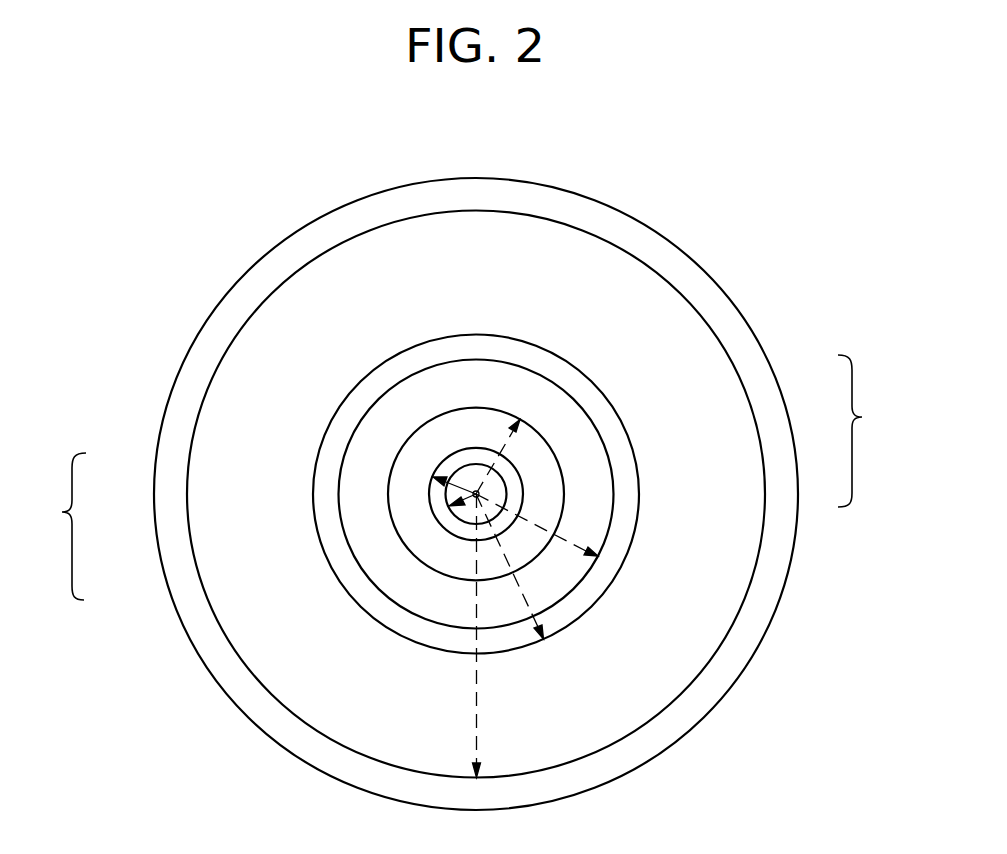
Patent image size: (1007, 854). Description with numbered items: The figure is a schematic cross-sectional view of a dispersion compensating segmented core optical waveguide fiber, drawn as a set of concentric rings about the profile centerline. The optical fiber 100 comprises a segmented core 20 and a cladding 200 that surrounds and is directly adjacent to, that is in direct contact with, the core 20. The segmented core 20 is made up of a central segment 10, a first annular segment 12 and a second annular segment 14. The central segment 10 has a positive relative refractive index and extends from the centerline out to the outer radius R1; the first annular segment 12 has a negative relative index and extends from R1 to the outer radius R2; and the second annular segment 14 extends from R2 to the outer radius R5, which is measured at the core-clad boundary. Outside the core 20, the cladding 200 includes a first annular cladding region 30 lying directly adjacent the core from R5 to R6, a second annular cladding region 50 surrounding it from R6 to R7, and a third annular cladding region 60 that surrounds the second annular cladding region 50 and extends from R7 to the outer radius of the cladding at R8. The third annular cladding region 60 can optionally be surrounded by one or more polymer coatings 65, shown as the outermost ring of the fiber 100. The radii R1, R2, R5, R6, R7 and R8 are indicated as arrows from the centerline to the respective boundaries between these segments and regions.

The optical fiber 100 is at (136, 324).
The polymer coatings 65 is at (680, 276).
The third annular cladding region 60 is at (683, 395).
The second annular cladding region 50 is at (620, 447).
The first annular cladding region 30 is at (577, 482).
The cladding layer 200 is at (875, 431).
The segmented core 20 is at (58, 526).
The central segment 10 is at (442, 487).
The first annular segment 12 is at (445, 517).
The second annular segment 14 is at (407, 534).
The outer radius of central segment R1 is at (475, 496).
The outer radius of first annular segment R2 is at (442, 472).
The outer radius of second annular segment R5 is at (498, 453).
The outer radius of first annular cladding region R6 is at (536, 527).
The outer radius of second annular cladding region R7 is at (517, 585).
The outer radius of cladding R8 is at (477, 707).